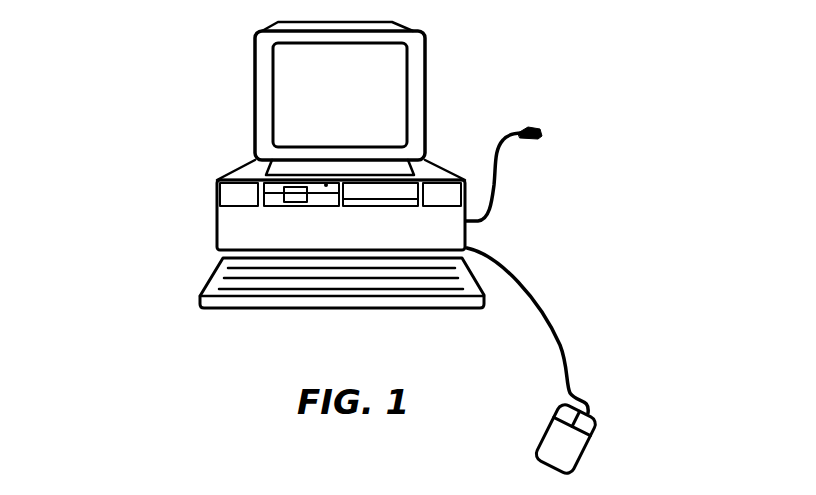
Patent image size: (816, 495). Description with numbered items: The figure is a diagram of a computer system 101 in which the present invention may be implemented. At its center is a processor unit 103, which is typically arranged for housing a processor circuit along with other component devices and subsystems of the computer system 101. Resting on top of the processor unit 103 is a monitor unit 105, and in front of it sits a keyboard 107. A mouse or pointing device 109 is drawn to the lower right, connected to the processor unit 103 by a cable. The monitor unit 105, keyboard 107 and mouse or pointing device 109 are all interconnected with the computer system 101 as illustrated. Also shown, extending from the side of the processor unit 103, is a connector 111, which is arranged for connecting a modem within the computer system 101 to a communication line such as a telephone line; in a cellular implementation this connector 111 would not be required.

The computer system 101 is at (642, 222).
The processor unit 103 is at (237, 222).
The monitor unit 105 is at (253, 118).
The keyboard 107 is at (203, 298).
The mouse or pointing device 109 is at (586, 453).
The connector 111 is at (528, 125).